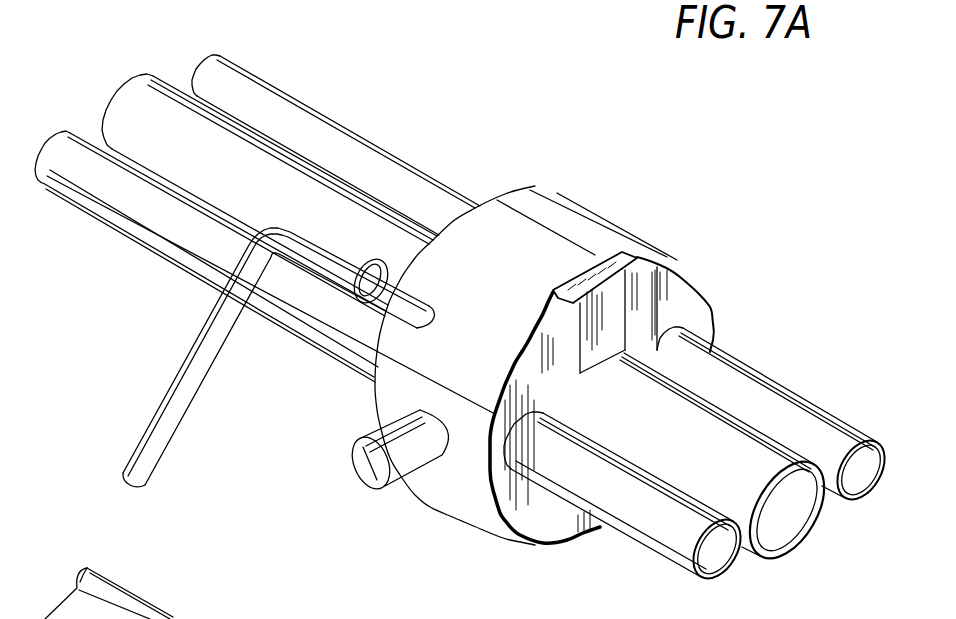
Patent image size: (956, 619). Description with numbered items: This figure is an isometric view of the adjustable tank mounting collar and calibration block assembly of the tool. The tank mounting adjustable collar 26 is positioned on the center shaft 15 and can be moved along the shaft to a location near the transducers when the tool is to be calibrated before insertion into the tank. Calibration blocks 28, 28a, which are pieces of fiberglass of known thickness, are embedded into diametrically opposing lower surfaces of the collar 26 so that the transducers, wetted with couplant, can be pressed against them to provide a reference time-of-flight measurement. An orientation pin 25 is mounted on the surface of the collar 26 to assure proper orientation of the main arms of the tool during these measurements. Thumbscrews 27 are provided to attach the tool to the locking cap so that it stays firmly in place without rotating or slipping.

The center shaft 15 is at (163, 107).
The orientation pin 25 is at (402, 497).
The tank mounting adjustable collar 26 is at (599, 212).
The thumbscrews 27 is at (390, 296).
The calibration block 28 is at (621, 318).
The calibration block 28a is at (590, 523).